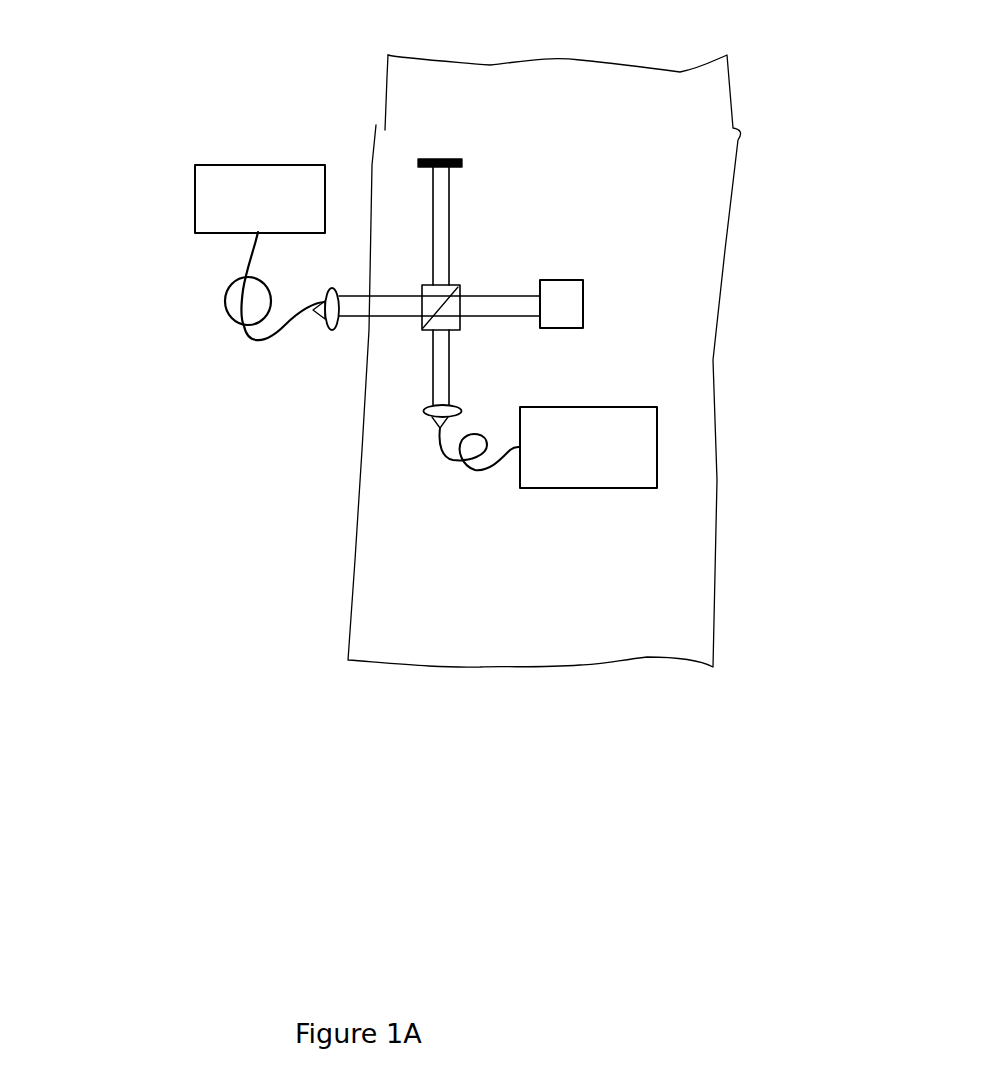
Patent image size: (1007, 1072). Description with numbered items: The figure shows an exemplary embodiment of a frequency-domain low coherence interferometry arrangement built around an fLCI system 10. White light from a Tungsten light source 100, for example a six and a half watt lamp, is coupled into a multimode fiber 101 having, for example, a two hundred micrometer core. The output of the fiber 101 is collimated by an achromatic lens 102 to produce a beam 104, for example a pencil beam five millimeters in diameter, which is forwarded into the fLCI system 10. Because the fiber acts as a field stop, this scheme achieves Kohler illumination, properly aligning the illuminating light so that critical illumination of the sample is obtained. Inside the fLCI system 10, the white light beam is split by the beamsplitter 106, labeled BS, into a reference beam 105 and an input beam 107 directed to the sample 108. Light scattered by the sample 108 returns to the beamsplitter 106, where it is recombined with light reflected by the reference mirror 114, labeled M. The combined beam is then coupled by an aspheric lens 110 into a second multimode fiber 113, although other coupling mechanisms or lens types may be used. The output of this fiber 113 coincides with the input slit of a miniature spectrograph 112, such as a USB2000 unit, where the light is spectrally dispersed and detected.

The fLCI system 10 is at (742, 128).
The Tungsten light source 100 is at (125, 270).
The multimode fiber 101 is at (167, 355).
The achromatic lens 102 is at (180, 430).
The beam 104 is at (280, 490).
The reference beam 105 is at (448, 288).
The beamsplitter 106 is at (473, 290).
The input beam 107 is at (493, 292).
The sample 108 is at (625, 296).
The aspheric lens 110 is at (417, 553).
The miniature spectrograph 112 is at (637, 552).
The multimode fiber 113 is at (518, 597).
The reference mirror 114 is at (433, 147).